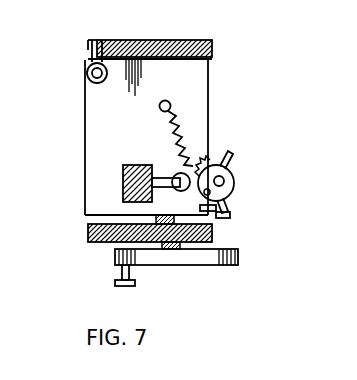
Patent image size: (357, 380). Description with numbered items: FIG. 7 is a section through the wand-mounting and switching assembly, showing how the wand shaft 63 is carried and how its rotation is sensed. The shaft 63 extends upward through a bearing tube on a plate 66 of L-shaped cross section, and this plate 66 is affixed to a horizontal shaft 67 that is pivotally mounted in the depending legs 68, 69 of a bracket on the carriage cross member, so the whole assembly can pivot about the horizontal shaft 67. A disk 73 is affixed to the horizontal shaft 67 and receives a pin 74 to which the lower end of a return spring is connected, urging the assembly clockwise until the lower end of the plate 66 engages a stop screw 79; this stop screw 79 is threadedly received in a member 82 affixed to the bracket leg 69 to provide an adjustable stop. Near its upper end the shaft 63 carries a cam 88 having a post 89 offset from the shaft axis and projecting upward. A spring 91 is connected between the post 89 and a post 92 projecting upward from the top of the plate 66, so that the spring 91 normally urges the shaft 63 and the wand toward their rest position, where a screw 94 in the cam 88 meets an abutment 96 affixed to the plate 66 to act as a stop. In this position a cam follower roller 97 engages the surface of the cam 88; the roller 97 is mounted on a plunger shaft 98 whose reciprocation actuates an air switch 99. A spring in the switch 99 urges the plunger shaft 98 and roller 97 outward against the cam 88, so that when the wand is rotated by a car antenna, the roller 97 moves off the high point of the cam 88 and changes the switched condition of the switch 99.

The shaft 63 is at (234, 170).
The plate 66 is at (209, 108).
The horizontal shaft 67 is at (196, 250).
The depending leg 68 is at (88, 234).
The depending leg 69 is at (213, 45).
The disk 73 is at (115, 257).
The pin 74 is at (135, 283).
The stop screw 79 is at (90, 83).
The member 82 is at (87, 73).
The cam 88 is at (236, 183).
The post 89 is at (211, 191).
The spring 91 is at (192, 146).
The post 92 is at (170, 104).
The screw 94 is at (230, 213).
The abutment 96 is at (210, 216).
The cam follower roller 97 is at (180, 173).
The plunger shaft 98 is at (130, 166).
The air switch 99 is at (123, 188).